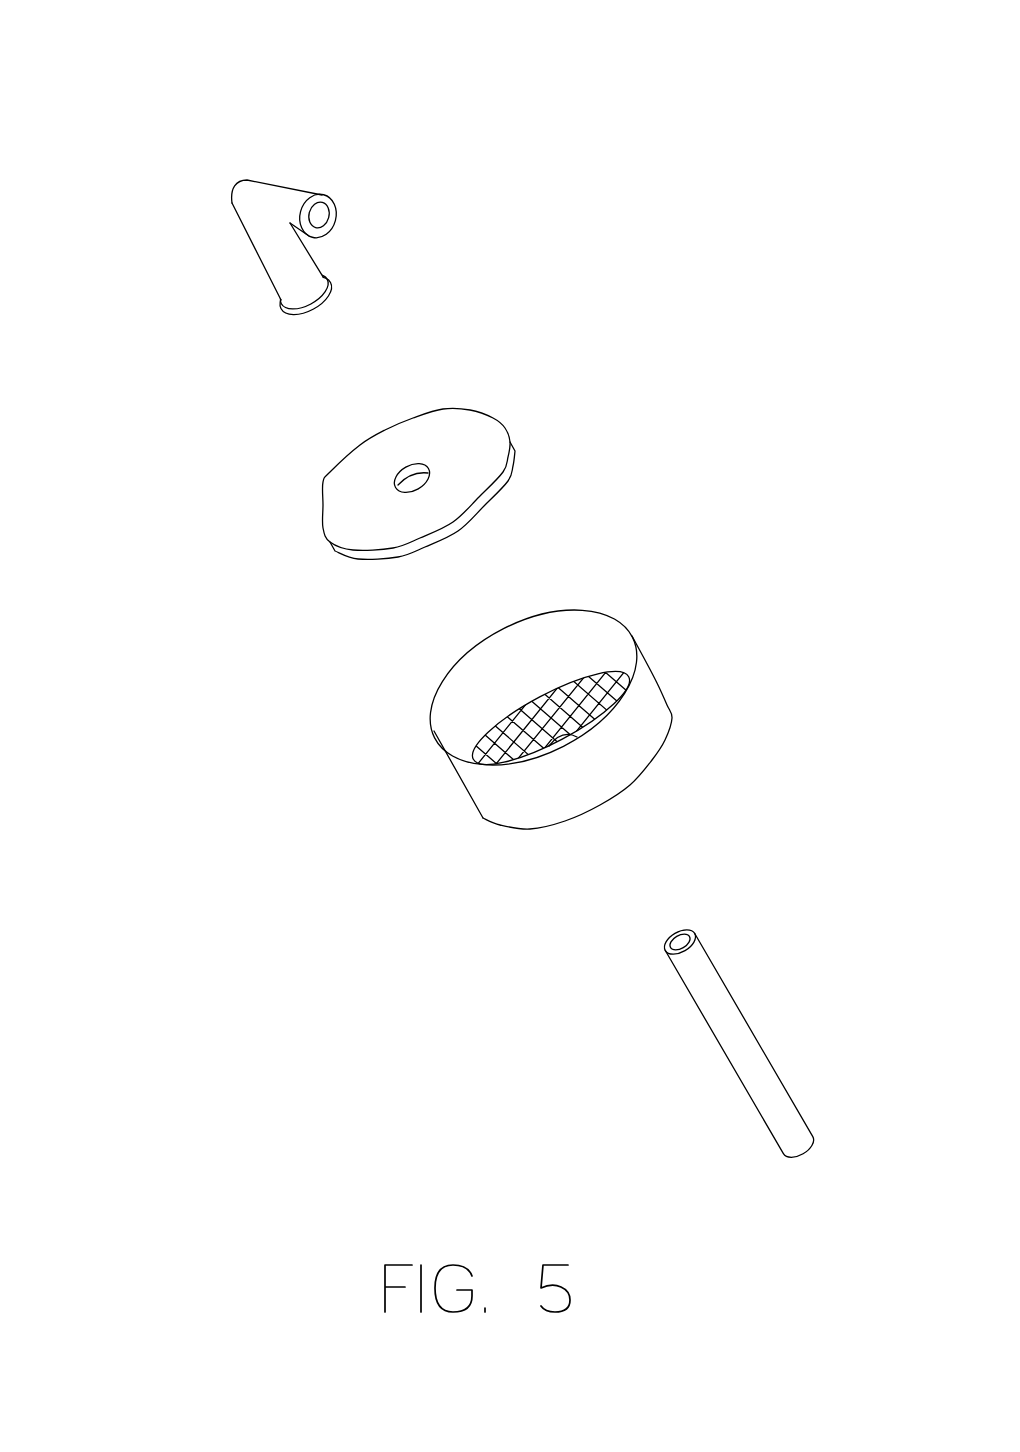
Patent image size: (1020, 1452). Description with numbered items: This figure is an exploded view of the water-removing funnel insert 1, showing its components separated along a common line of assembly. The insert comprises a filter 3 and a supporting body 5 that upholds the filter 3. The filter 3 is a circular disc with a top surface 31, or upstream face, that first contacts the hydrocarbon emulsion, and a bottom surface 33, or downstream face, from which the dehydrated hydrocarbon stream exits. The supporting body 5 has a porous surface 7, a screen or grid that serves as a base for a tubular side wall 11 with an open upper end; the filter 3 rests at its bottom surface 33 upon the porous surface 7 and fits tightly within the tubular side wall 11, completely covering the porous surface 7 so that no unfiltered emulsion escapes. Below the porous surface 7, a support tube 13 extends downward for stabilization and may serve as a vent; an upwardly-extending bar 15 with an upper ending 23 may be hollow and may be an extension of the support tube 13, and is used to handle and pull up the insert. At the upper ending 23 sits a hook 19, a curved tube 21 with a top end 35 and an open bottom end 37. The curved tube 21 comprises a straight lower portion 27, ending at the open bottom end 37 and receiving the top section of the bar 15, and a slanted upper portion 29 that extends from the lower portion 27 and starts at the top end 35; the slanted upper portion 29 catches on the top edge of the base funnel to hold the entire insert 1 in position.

The water-removing funnel insert 1 is at (737, 313).
The filter 3 is at (437, 505).
The supporting body 5 is at (578, 726).
The porous surface 7 is at (670, 535).
The tubular side wall 11 is at (658, 680).
The support tube 13 is at (761, 1023).
The upwardly-extending bar 15 is at (707, 975).
The hook 19 is at (293, 234).
The curved tube 21 is at (232, 207).
The upper ending 23 is at (743, 859).
The lower portion 27 is at (176, 273).
The slanted upper portion 29 is at (297, 190).
The top surface 31 is at (442, 442).
The bottom surface 33 is at (358, 558).
The top end 35 is at (337, 212).
The open bottom end 37 is at (293, 325).